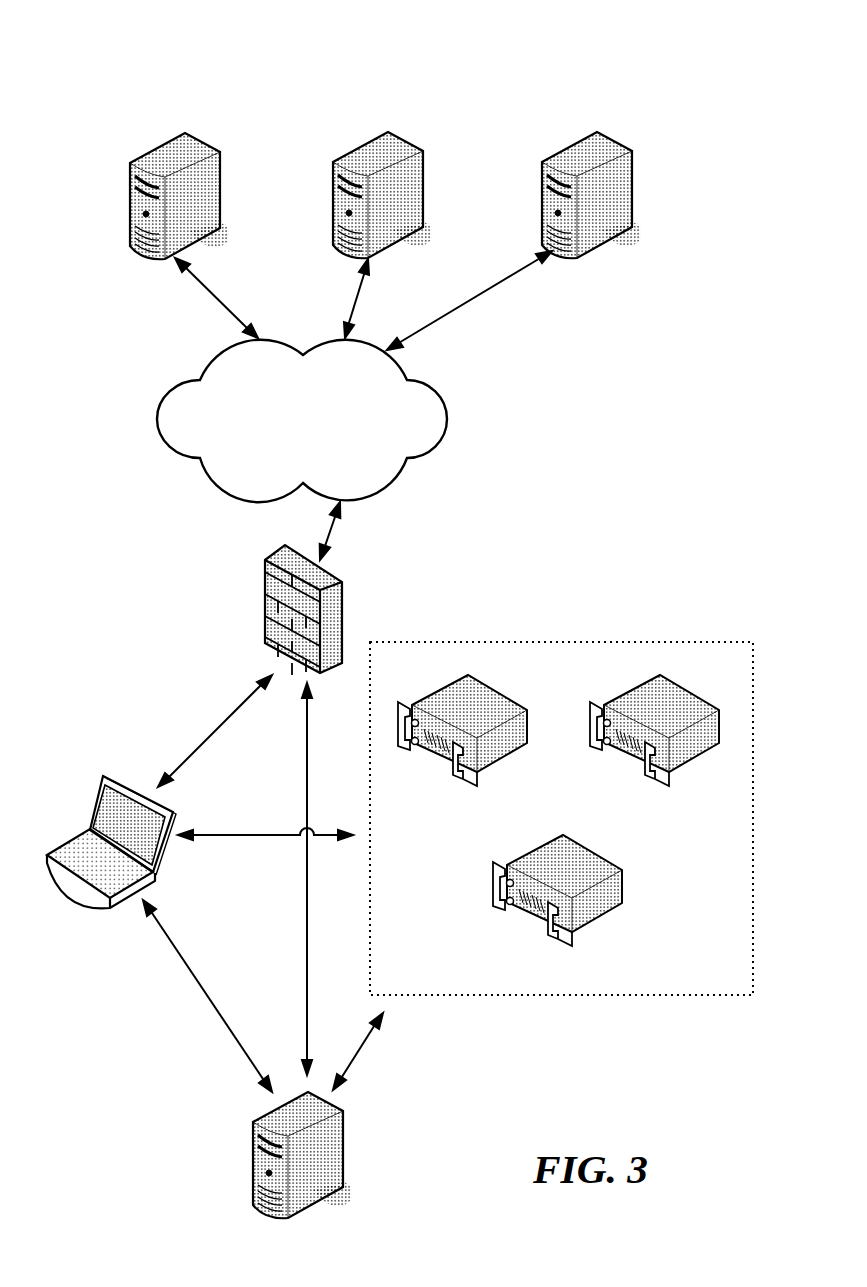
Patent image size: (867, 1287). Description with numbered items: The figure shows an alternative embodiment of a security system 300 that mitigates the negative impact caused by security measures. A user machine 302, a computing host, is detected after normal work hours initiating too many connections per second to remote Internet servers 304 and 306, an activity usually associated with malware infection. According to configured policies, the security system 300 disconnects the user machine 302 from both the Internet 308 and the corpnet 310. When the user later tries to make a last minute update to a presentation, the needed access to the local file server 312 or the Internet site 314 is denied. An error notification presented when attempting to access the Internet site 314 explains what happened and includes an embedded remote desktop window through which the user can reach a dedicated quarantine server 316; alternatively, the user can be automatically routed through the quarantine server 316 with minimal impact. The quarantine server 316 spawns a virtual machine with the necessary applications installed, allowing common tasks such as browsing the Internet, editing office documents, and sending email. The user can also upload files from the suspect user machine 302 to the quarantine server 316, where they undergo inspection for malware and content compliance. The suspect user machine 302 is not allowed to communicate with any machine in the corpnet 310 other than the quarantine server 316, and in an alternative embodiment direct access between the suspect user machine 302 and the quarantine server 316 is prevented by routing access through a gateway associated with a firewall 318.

The security system 300 is at (727, 46).
The user machine 302 is at (110, 772).
The remote Internet server 304 is at (210, 146).
The remote Internet server 306 is at (415, 143).
The Internet 308 is at (430, 380).
The corpnet 310 is at (692, 604).
The local file server 312 is at (597, 855).
The Internet site 314 is at (625, 143).
The quarantine server 316 is at (345, 1142).
The firewall 318 is at (338, 574).